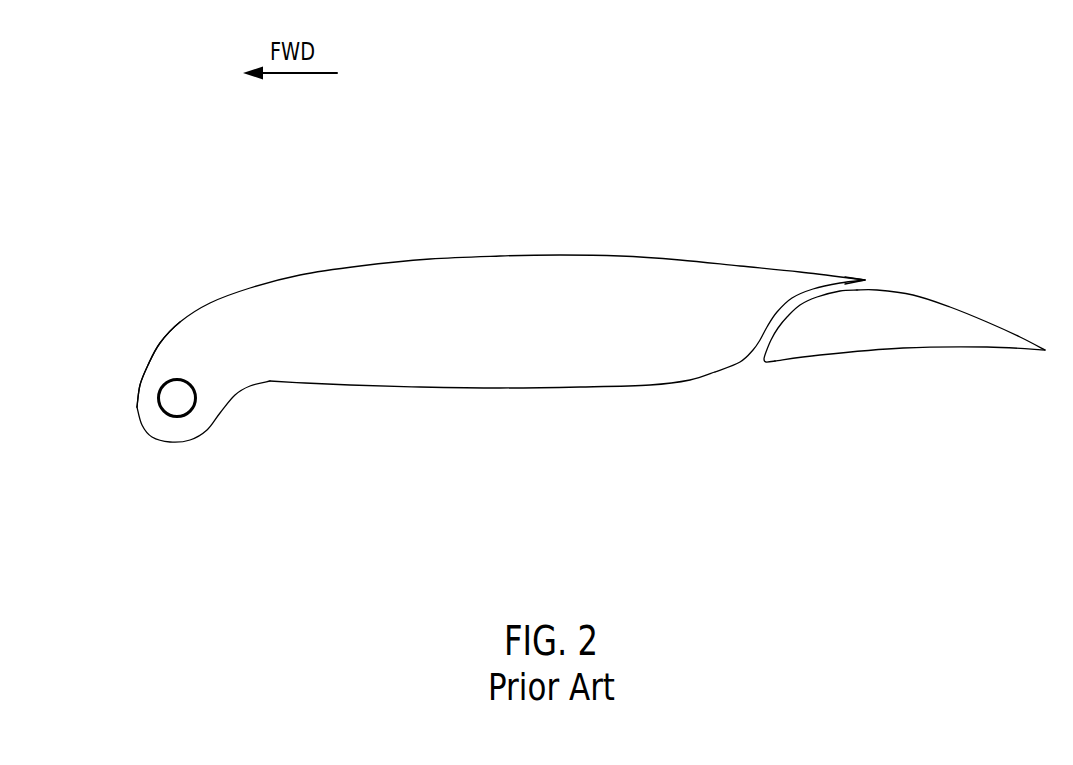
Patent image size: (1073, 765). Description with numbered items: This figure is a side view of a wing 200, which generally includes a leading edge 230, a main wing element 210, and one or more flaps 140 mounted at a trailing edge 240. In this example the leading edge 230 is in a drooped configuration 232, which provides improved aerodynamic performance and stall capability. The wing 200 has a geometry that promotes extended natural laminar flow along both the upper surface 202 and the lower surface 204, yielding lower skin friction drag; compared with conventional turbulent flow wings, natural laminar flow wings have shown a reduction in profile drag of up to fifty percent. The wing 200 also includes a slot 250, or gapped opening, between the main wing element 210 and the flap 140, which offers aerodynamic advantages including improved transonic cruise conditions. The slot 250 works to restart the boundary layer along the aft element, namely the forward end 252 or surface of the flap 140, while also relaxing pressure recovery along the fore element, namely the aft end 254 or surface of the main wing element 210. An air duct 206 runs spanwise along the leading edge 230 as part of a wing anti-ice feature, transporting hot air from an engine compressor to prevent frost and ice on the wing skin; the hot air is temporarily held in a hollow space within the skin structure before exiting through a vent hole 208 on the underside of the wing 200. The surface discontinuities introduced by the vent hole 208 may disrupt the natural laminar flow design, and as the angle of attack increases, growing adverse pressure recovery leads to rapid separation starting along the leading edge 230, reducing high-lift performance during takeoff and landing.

The flap 140 is at (957, 294).
The wing 200 is at (434, 181).
The upper surface 202 is at (593, 270).
The lower surface 204 is at (593, 380).
The air duct 206 is at (163, 413).
The vent hole 208 is at (173, 442).
The main wing element 210 is at (369, 254).
The leading edge 230 is at (154, 302).
The drooped configuration 232 is at (136, 362).
The trailing edge 240 is at (941, 242).
The slot 250 is at (876, 279).
The forward end 252 is at (790, 334).
The aft end 254 is at (763, 297).